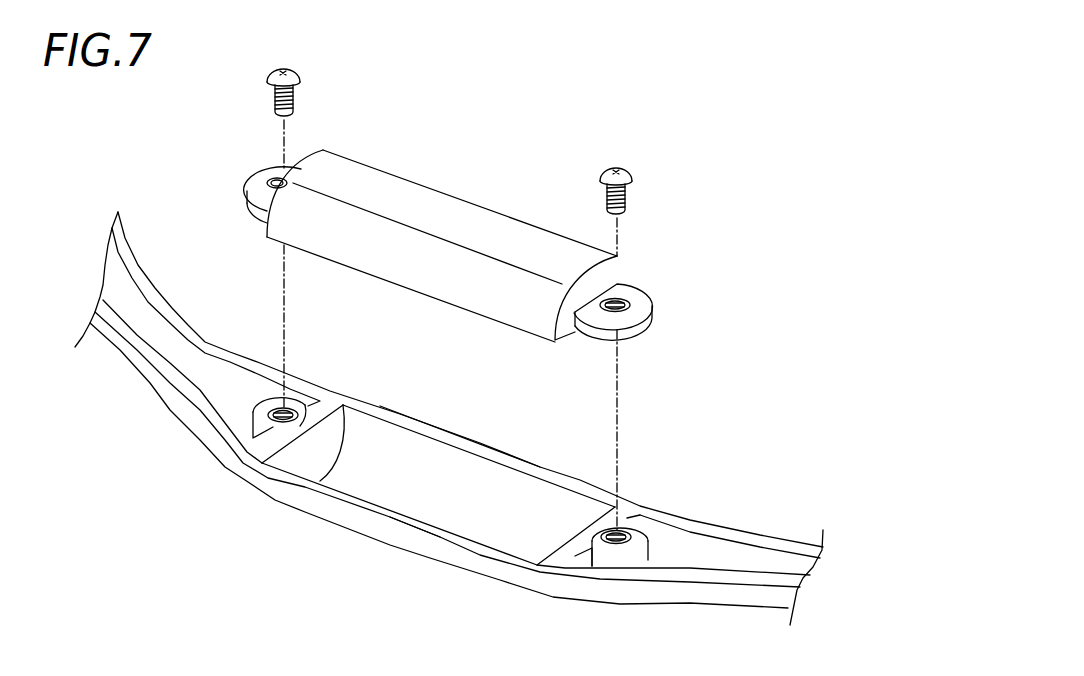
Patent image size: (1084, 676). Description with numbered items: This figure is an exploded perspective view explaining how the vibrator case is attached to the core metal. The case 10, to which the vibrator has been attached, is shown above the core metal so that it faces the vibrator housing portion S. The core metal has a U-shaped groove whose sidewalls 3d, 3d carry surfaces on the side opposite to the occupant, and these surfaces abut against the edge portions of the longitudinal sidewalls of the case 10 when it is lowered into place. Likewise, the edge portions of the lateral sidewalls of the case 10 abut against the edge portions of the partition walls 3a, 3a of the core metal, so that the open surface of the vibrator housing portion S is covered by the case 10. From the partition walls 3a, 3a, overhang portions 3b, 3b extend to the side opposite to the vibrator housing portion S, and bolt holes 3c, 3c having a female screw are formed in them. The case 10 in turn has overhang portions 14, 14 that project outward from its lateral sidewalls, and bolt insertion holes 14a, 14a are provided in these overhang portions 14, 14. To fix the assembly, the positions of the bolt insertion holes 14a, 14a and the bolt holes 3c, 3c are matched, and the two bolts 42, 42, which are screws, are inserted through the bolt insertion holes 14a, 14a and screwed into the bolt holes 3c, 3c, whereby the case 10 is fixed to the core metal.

The case 10 is at (468, 192).
The overhang portion 14 is at (247, 200).
The bolt insertion hole 14a is at (274, 178).
The bolt 42 is at (300, 74).
The partition wall 3a is at (310, 448).
The overhang portion 3b is at (262, 408).
The bolt hole 3c is at (280, 425).
The sidewall 3d is at (483, 452).
The vibrator housing portion S is at (473, 513).